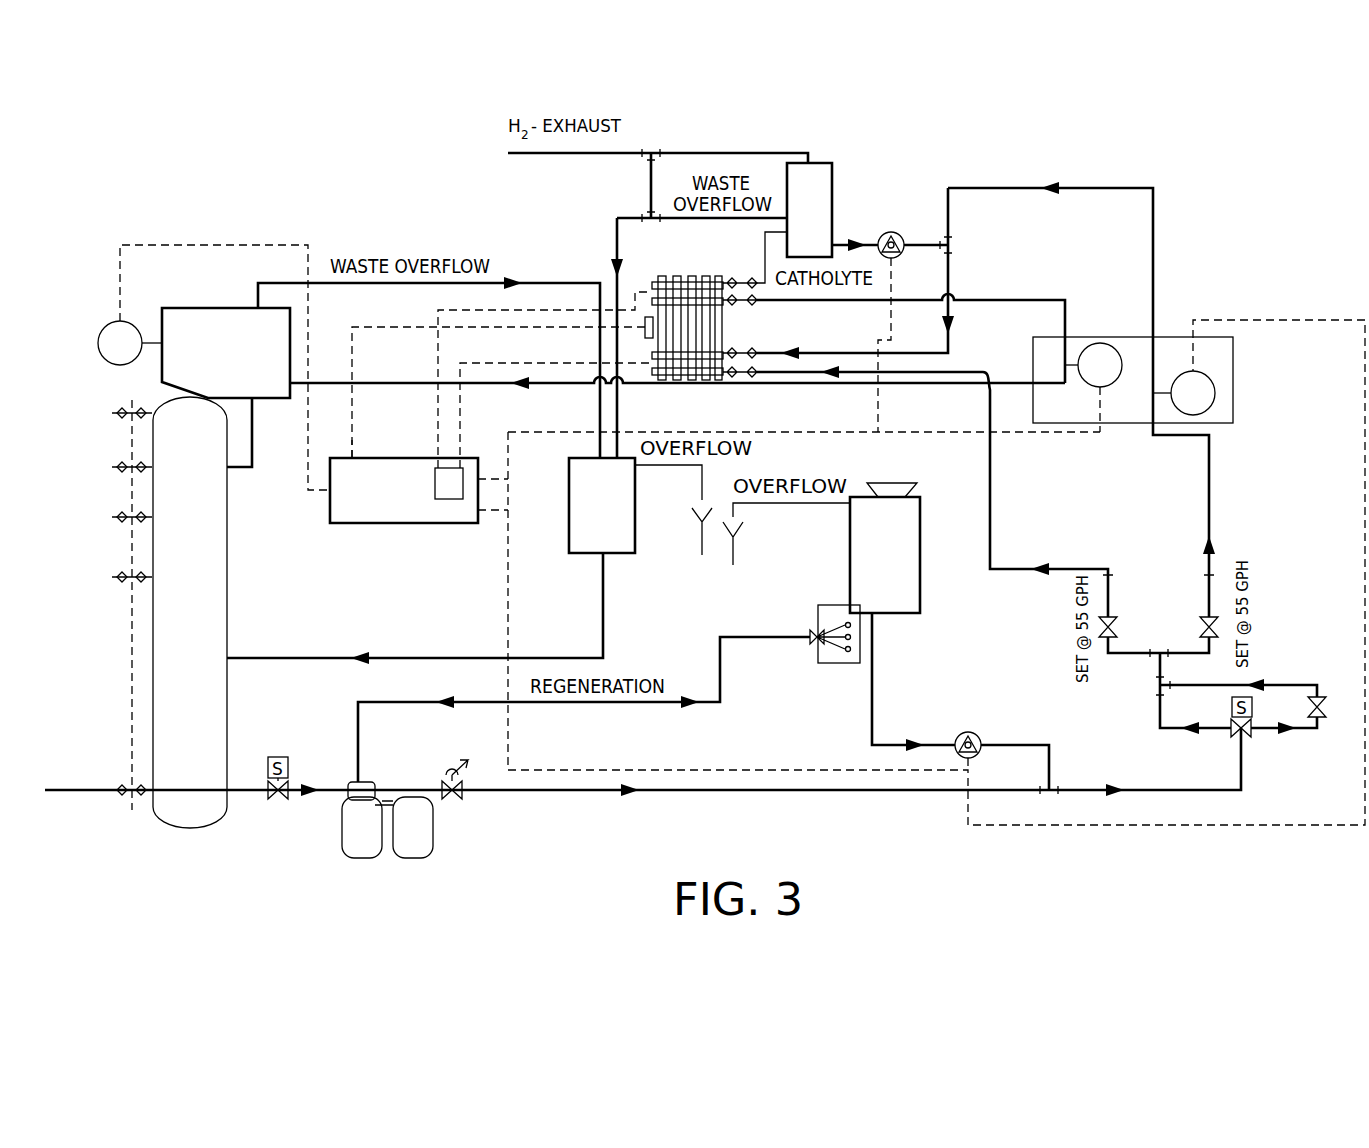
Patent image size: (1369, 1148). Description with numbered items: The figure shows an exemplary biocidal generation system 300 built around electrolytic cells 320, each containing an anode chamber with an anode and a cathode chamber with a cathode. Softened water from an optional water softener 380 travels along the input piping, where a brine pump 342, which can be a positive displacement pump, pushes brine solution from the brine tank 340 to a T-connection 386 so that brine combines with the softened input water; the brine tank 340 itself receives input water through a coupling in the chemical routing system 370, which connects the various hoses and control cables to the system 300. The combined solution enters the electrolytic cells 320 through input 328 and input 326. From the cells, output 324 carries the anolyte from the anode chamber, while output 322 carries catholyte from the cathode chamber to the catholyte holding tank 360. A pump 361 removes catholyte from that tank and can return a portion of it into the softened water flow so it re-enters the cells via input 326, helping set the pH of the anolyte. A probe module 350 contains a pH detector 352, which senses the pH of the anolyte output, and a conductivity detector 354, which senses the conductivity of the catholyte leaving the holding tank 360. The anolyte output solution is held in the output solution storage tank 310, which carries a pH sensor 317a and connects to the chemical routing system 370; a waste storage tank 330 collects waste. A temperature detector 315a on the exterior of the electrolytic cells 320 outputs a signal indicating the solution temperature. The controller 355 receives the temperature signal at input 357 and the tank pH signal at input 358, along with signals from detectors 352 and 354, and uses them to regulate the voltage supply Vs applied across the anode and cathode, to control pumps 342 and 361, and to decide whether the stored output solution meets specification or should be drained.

The biocidal generation system 300 is at (1272, 147).
The output solution storage tank 310 is at (226, 353).
The temperature detector 315a is at (645, 334).
The pH sensor 317a is at (108, 592).
The electrolytic cells 320 is at (687, 314).
The output 322 is at (741, 268).
The output 324 is at (741, 313).
The input 326 is at (752, 348).
The input 328 is at (752, 378).
The waste storage tank 330 is at (602, 505).
The brine tank 340 is at (885, 548).
The brine pump 342 is at (967, 731).
The probe module 350 is at (1133, 365).
The pH detector 352 is at (1105, 375).
The conductivity detector 354 is at (1216, 393).
The controller 355 is at (404, 490).
The input 357 is at (372, 447).
The input 358 is at (214, 378).
The catholyte holding tank 360 is at (809, 210).
The pump 361 is at (894, 231).
The chemical routing system 370 is at (190, 612).
The water softener 380 is at (410, 821).
The T-connection 386 is at (1055, 788).